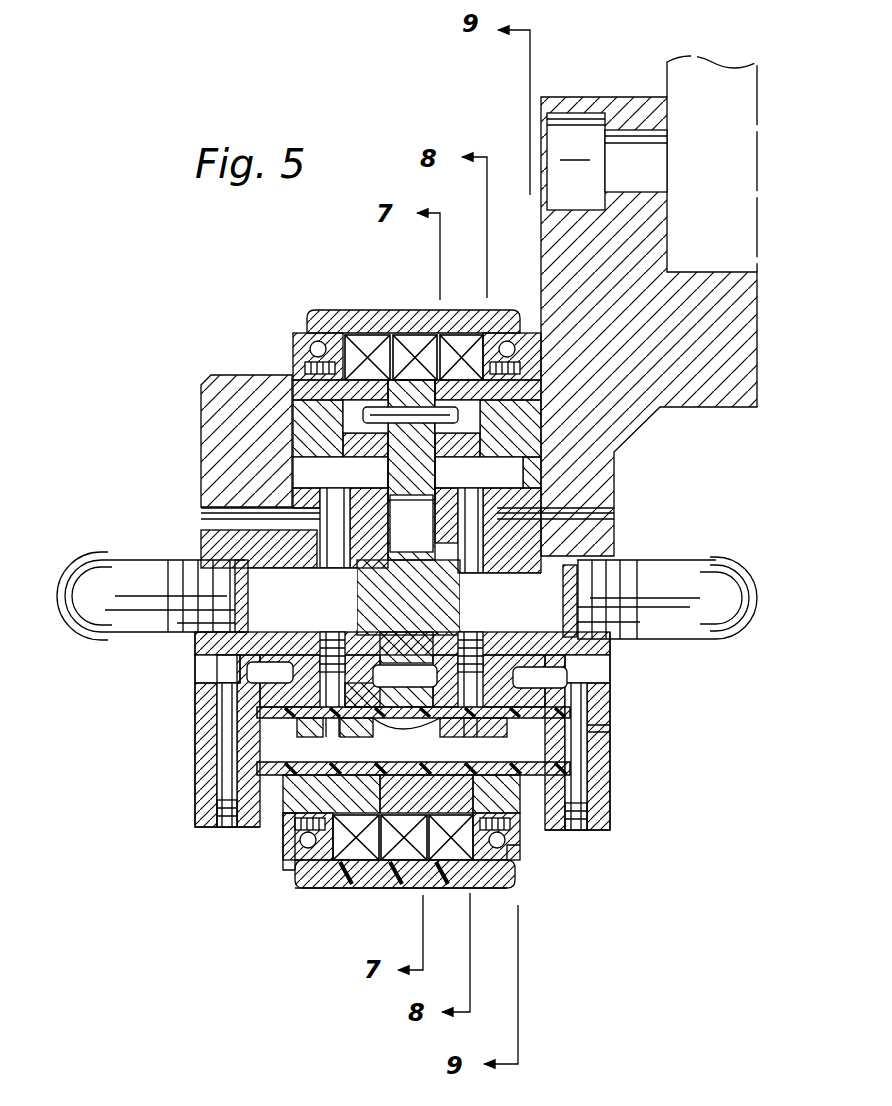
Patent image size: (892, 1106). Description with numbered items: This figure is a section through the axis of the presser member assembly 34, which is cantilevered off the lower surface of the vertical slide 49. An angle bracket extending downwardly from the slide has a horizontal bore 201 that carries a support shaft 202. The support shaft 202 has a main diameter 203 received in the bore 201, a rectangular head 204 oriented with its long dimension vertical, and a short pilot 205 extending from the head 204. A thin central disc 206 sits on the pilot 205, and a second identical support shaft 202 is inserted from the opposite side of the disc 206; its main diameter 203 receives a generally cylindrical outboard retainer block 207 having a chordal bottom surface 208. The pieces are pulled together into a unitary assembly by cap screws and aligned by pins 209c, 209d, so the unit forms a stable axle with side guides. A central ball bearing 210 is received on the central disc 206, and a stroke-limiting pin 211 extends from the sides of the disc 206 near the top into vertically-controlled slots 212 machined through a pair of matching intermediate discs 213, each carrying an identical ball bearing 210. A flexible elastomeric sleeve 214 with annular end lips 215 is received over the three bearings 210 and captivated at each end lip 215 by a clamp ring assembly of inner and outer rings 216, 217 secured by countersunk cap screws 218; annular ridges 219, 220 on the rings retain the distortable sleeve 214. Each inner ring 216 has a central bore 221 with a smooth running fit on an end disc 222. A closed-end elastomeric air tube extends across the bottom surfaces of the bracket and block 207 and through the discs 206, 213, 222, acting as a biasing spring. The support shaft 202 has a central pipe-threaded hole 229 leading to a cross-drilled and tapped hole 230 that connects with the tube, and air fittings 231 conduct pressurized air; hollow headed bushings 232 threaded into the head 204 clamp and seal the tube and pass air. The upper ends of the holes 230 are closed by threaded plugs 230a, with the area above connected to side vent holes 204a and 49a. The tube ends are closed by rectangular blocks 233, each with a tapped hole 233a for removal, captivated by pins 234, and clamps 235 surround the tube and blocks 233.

The presser member assembly 34 is at (200, 340).
The vertical slide 49 is at (667, 72).
The side vent hole 49a is at (613, 517).
The horizontal bore 201 is at (620, 548).
The support shaft 202 is at (200, 645).
The main diameter 203 is at (215, 532).
The rectangular head 204 is at (300, 495).
The side vent hole 204a is at (520, 527).
The short pilot 205 is at (430, 524).
The central disc 206 is at (411, 440).
The outboard retainer block 207 is at (200, 404).
The chordal bottom surface 208 is at (197, 712).
The pin 209c is at (353, 628).
The pin 209d is at (312, 630).
The ball bearing 210 is at (432, 880).
The stroke-limiting pin 211 is at (470, 420).
The vertically-controlled slot 212 is at (345, 400).
The intermediate disc 213 is at (330, 452).
The sleeve 214 is at (312, 888).
The annular end lip 215 is at (300, 866).
The inner ring 216 is at (485, 890).
The outer ring 217 is at (512, 868).
The countersunk cap screw 218 is at (512, 840).
The annular ridge 219 is at (290, 853).
The annular ridge 220 is at (300, 871).
The central bore 221 is at (525, 812).
The end disc 222 is at (292, 398).
The central pipe-threaded hole 229 is at (543, 652).
The cross-drilled and tapped hole 230 is at (477, 640).
The threaded plug 230a is at (439, 641).
The air fitting 231 is at (740, 557).
The hollow headed bushing 232 is at (406, 740).
The rectangular block 233 is at (648, 782).
The tapped hole 233a is at (612, 736).
The pin 234 is at (200, 791).
The clamp 235 is at (205, 824).